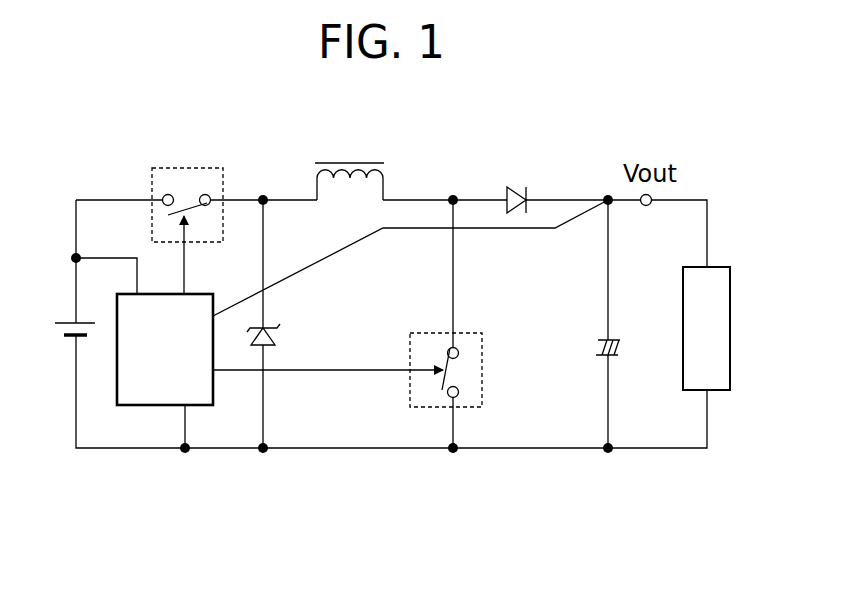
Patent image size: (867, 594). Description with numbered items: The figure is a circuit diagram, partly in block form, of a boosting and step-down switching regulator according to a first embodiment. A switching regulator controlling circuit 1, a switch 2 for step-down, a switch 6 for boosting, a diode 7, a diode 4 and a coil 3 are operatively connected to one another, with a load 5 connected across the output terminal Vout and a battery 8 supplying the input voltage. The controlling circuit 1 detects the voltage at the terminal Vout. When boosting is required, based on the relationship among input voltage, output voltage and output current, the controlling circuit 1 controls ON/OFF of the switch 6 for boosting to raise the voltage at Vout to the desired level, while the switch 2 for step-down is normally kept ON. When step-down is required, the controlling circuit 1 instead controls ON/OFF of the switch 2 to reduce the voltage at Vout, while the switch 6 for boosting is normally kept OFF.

The switching regulator controlling circuit 1 is at (200, 405).
The switch for step-down 2 is at (225, 177).
The coil 3 is at (383, 178).
The diode 4 is at (528, 190).
The load 5 is at (717, 267).
The switch for boosting 6 is at (472, 410).
The diode 7 is at (267, 325).
The battery 8 is at (67, 336).